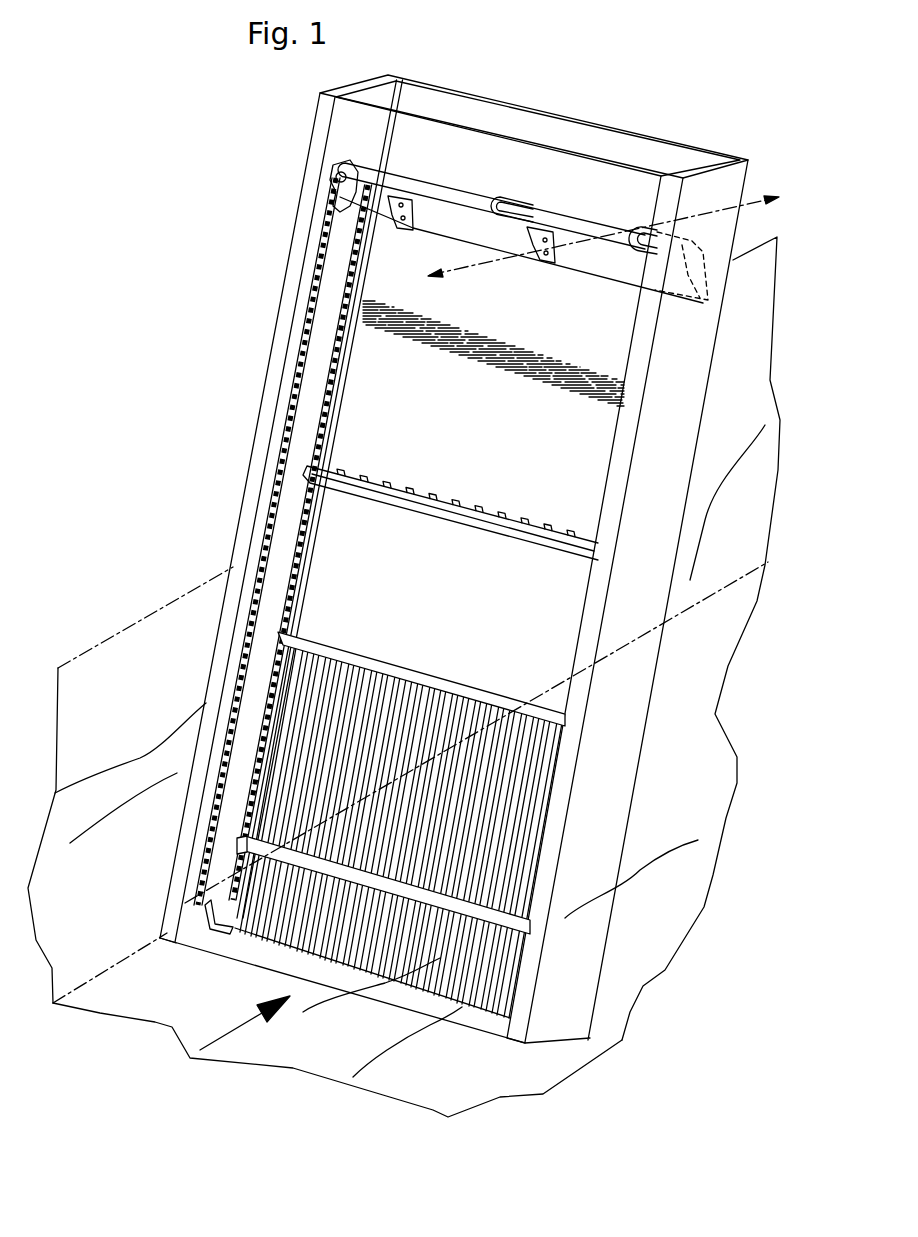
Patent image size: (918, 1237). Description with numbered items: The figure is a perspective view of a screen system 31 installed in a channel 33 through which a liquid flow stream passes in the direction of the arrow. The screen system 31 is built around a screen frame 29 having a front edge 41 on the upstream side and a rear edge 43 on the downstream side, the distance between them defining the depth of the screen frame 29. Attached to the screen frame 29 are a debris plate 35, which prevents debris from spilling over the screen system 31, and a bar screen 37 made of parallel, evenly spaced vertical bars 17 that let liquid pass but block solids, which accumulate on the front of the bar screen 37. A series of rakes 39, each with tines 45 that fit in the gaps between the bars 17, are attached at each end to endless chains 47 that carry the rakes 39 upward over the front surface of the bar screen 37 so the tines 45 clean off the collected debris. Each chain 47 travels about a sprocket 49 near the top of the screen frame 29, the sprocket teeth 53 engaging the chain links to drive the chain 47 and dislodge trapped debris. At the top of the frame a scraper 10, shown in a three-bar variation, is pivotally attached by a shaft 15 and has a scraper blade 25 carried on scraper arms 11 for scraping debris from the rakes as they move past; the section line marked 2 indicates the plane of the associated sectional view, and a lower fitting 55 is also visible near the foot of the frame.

The section line 2- 2 is at (617, 244).
The scraper 10 is at (352, 150).
The scraper arms 11 is at (366, 165).
The shaft 15 is at (437, 196).
The vertical bars 17 is at (492, 712).
The scraper blade 25 is at (575, 270).
The screen frame 29 is at (565, 981).
The screen system 31 is at (188, 86).
The channel 33 is at (136, 620).
The debris plate 35 is at (382, 408).
The bar screen 37 is at (370, 640).
The rakes 39 is at (375, 500).
The front edge 41 is at (517, 1060).
The rear edge 43 is at (639, 786).
The tines 45 is at (418, 483).
The endless chains 47 is at (302, 330).
The sprocket 49 is at (342, 195).
The teeth 53 is at (347, 215).
The lower bracket 55 is at (216, 910).